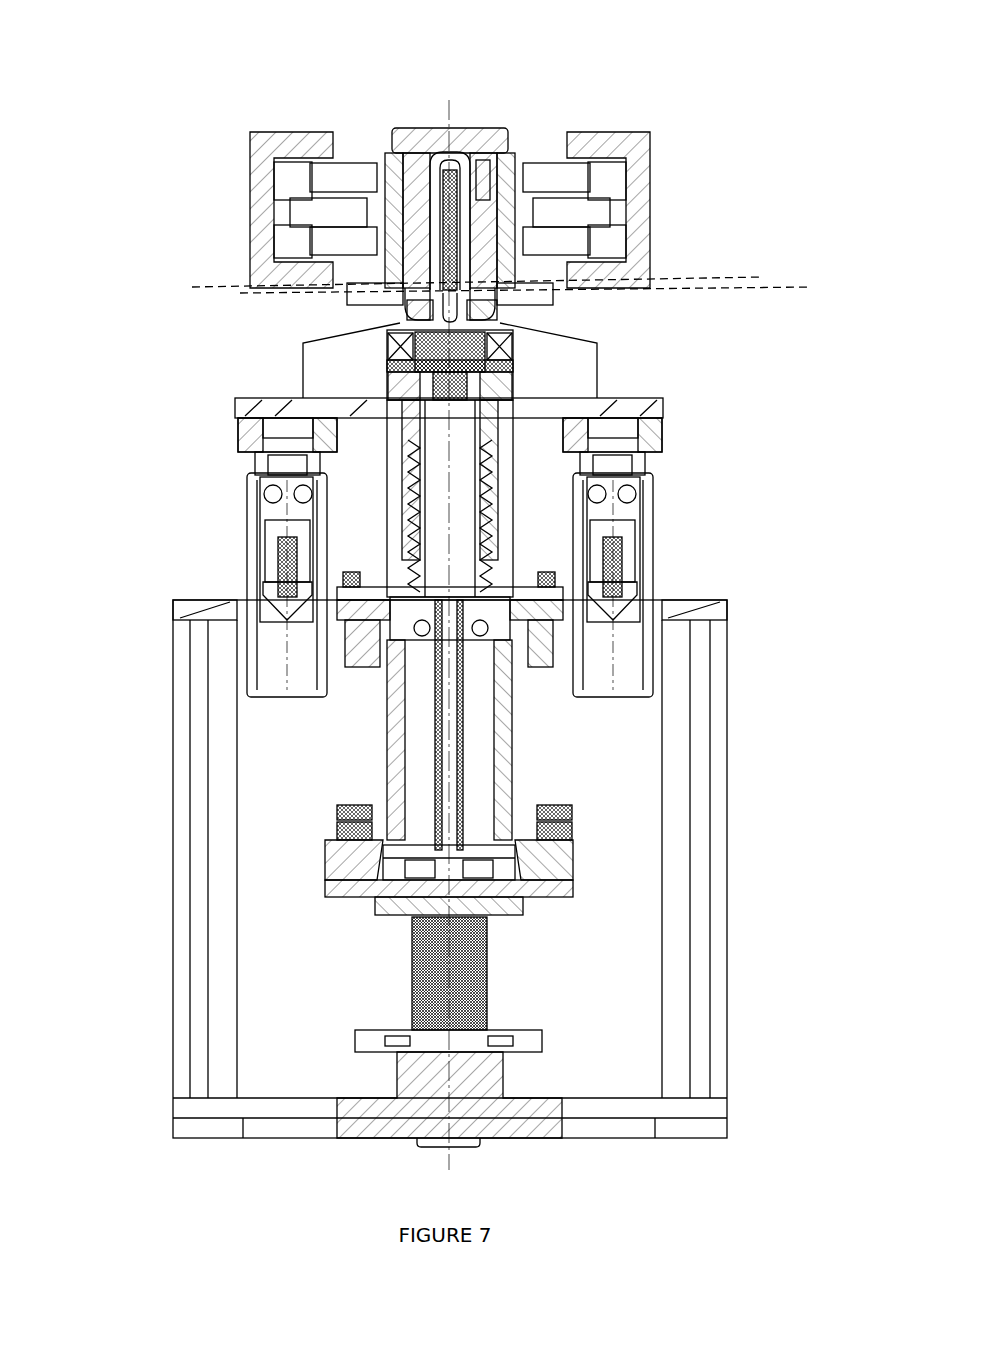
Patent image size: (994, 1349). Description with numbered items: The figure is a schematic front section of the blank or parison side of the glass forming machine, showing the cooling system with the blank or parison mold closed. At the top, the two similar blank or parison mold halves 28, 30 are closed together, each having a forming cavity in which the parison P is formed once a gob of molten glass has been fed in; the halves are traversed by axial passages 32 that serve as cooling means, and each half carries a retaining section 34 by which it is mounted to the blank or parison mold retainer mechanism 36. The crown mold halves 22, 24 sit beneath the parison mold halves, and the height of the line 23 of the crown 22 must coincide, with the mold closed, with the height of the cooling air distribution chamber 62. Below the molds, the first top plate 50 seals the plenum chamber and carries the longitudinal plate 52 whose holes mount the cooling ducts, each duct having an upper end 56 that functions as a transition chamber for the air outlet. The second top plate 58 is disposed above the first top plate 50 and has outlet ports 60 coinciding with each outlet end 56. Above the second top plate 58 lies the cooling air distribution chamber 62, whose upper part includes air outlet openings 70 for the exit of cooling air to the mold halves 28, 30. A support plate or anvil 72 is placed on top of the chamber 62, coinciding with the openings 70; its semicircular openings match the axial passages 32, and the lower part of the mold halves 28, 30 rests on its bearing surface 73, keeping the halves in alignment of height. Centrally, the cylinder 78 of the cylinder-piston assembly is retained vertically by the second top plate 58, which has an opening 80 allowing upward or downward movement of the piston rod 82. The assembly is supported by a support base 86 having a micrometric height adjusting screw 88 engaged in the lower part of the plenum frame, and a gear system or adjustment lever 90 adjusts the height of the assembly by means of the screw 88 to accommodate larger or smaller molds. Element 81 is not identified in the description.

The crown mold half 22 is at (427, 295).
The line of the crown 23 is at (539, 290).
The crown mold half 24 is at (467, 295).
The blank or parison mold half 28 is at (420, 182).
The blank or parison mold half 30 is at (487, 202).
The axial passages 32 is at (403, 217).
The retaining section 34 is at (558, 182).
The blank or parison mold retainer mechanism 36 is at (633, 175).
The first top plate 50 is at (187, 610).
The longitudinal plate 52 is at (253, 555).
The upper end of cooling duct 56 is at (277, 462).
The second top plate 58 is at (237, 405).
The outlet ports 60 is at (307, 405).
The cooling air distribution chamber 62 is at (303, 343).
The air outlet openings 70 is at (410, 300).
The support plate or anvil 72 is at (395, 288).
The bearing surface 73 is at (490, 273).
The cylinder 78 is at (505, 748).
The opening 80 is at (445, 693).
The lower seal 81 is at (440, 372).
The piston rod 82 is at (460, 370).
The support base 86 is at (523, 872).
The micrometric height adjusting screw 88 is at (442, 963).
The gear system or adjustment lever 90 is at (330, 825).
The parison P is at (440, 157).